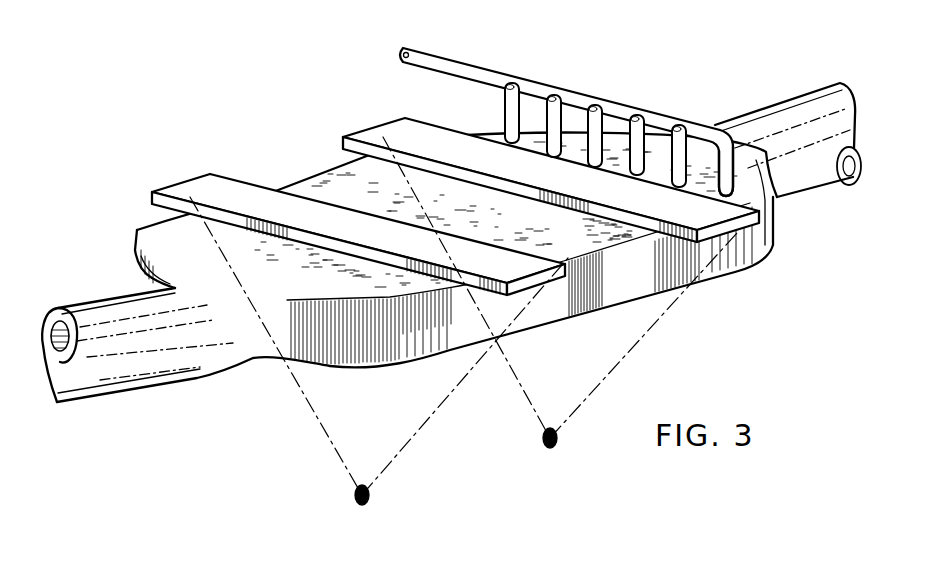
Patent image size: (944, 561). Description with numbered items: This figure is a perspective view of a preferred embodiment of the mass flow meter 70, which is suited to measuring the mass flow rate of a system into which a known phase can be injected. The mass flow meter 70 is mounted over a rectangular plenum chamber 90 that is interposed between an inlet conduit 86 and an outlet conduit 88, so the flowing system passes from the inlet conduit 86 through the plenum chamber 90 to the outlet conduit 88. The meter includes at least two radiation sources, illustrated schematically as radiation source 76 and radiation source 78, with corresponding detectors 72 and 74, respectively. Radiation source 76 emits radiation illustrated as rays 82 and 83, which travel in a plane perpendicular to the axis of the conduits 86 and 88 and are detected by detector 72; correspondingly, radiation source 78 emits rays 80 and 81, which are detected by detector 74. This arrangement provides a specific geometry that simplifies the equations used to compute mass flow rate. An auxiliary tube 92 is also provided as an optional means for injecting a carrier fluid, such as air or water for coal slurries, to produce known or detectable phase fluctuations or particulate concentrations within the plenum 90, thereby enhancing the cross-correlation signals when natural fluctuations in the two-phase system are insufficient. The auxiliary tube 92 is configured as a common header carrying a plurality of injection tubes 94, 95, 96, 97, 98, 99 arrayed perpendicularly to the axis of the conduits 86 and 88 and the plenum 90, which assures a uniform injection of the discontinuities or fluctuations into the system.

The mass flow meter 70 is at (236, 175).
The detector 72 is at (385, 134).
The detector 74 is at (202, 186).
The radiation source 76 is at (556, 446).
The radiation source 78 is at (370, 497).
The ray 80 is at (332, 448).
The ray 81 is at (410, 442).
The ray 82 is at (507, 356).
The ray 83 is at (640, 344).
The inlet conduit 86 is at (820, 100).
The outlet conduit 88 is at (88, 306).
The plenum chamber 90 is at (650, 286).
The auxiliary tube 92 is at (462, 62).
The injection tube 94 is at (520, 97).
The injection tube 95 is at (568, 107).
The injection tube 96 is at (607, 117).
The injection tube 97 is at (657, 127).
The injection tube 98 is at (700, 140).
The injection tube 99 is at (727, 150).